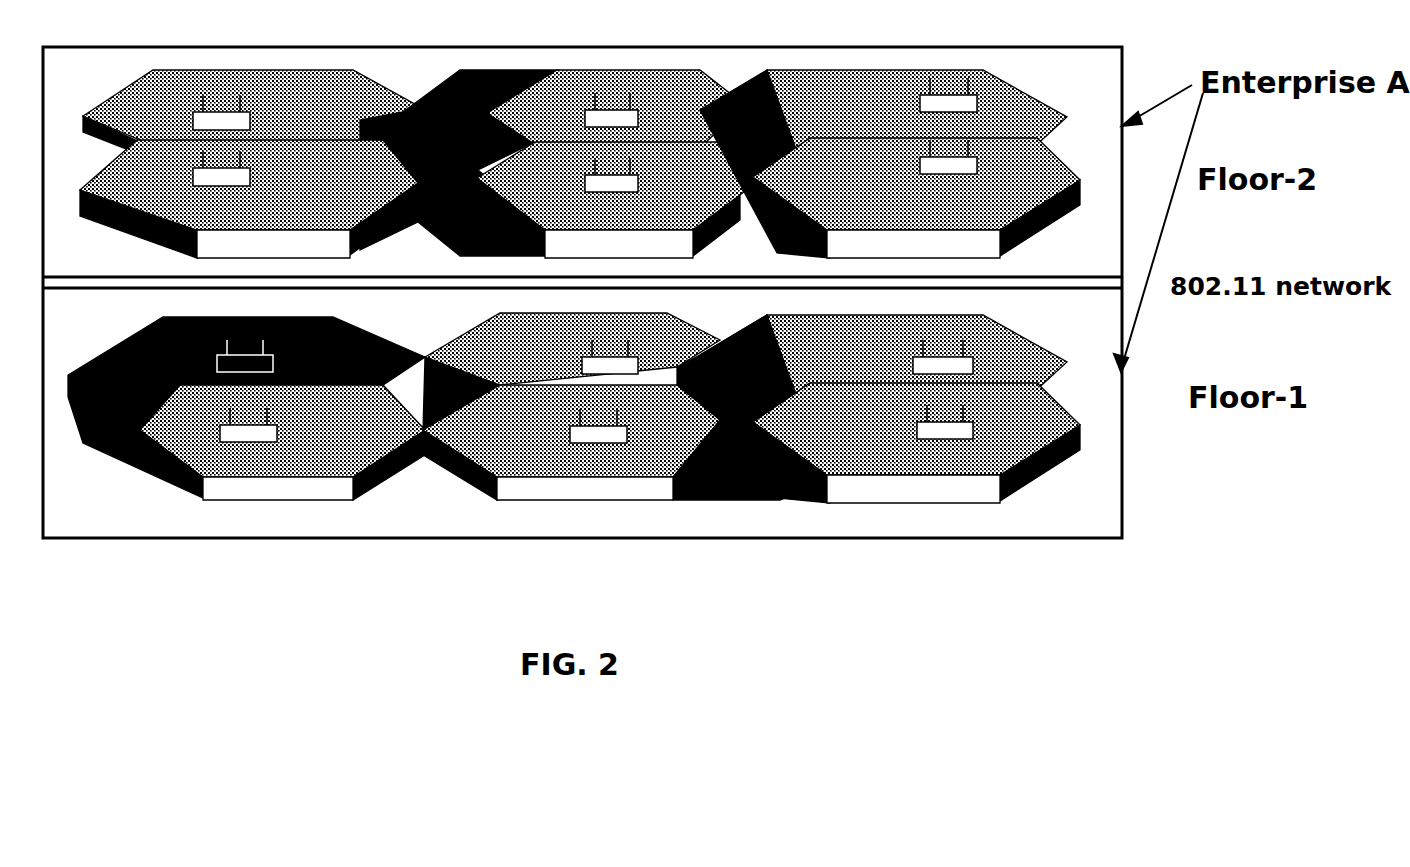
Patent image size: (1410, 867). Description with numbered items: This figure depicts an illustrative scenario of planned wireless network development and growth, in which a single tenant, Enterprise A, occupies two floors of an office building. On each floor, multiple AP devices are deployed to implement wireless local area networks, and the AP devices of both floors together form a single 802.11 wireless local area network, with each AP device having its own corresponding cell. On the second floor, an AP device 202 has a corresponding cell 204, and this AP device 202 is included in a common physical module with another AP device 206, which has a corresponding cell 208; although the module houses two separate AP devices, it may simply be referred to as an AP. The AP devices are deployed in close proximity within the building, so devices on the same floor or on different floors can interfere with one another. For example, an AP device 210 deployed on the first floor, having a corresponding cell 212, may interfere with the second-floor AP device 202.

The AP device 202 is at (978, 150).
The cell 204 is at (1040, 218).
The AP device 206 is at (923, 150).
The cell 208 is at (743, 233).
The AP device 210 is at (977, 350).
The cell 212 is at (1050, 350).